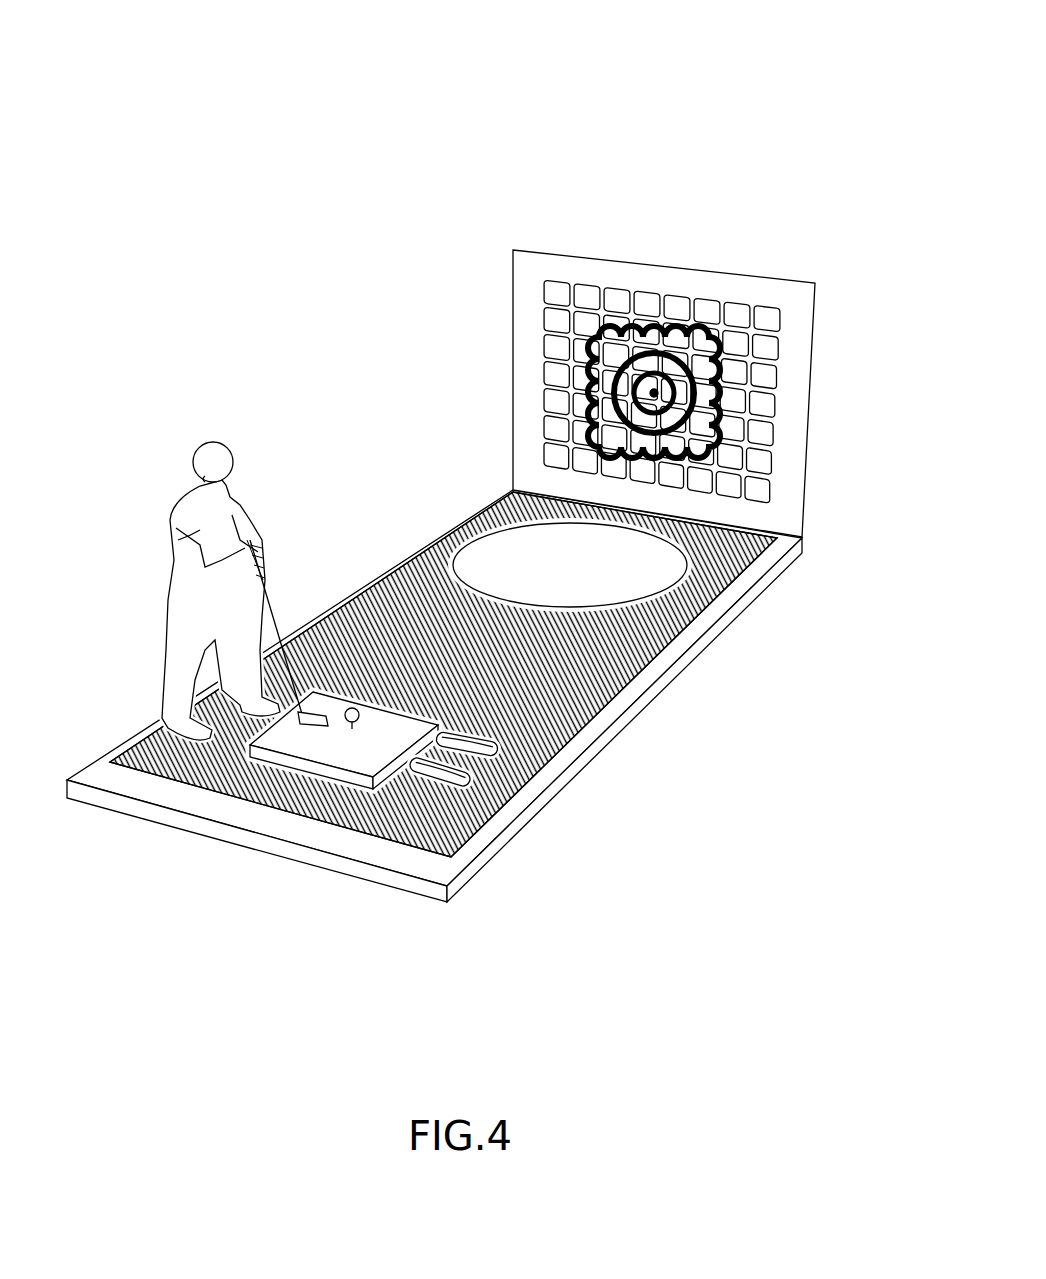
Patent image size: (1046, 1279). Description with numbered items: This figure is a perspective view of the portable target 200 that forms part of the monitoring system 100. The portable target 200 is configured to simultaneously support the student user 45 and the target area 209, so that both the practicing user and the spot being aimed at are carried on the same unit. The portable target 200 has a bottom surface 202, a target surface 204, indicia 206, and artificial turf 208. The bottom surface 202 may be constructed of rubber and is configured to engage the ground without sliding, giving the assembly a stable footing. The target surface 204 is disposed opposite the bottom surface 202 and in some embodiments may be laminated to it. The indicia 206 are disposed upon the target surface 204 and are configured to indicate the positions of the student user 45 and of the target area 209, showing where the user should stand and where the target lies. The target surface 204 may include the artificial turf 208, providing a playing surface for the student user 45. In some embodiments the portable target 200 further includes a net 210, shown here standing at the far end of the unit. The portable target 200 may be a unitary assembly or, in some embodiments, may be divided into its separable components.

The monitoring system 100 is at (550, 88).
The student user 45 is at (172, 465).
The portable target 200 is at (697, 343).
The bottom surface 202 is at (580, 722).
The target surface 204 is at (450, 867).
The indicia 206 is at (417, 785).
The artificial turf 208 is at (637, 695).
The target area 209 is at (515, 534).
The net 210 is at (484, 317).